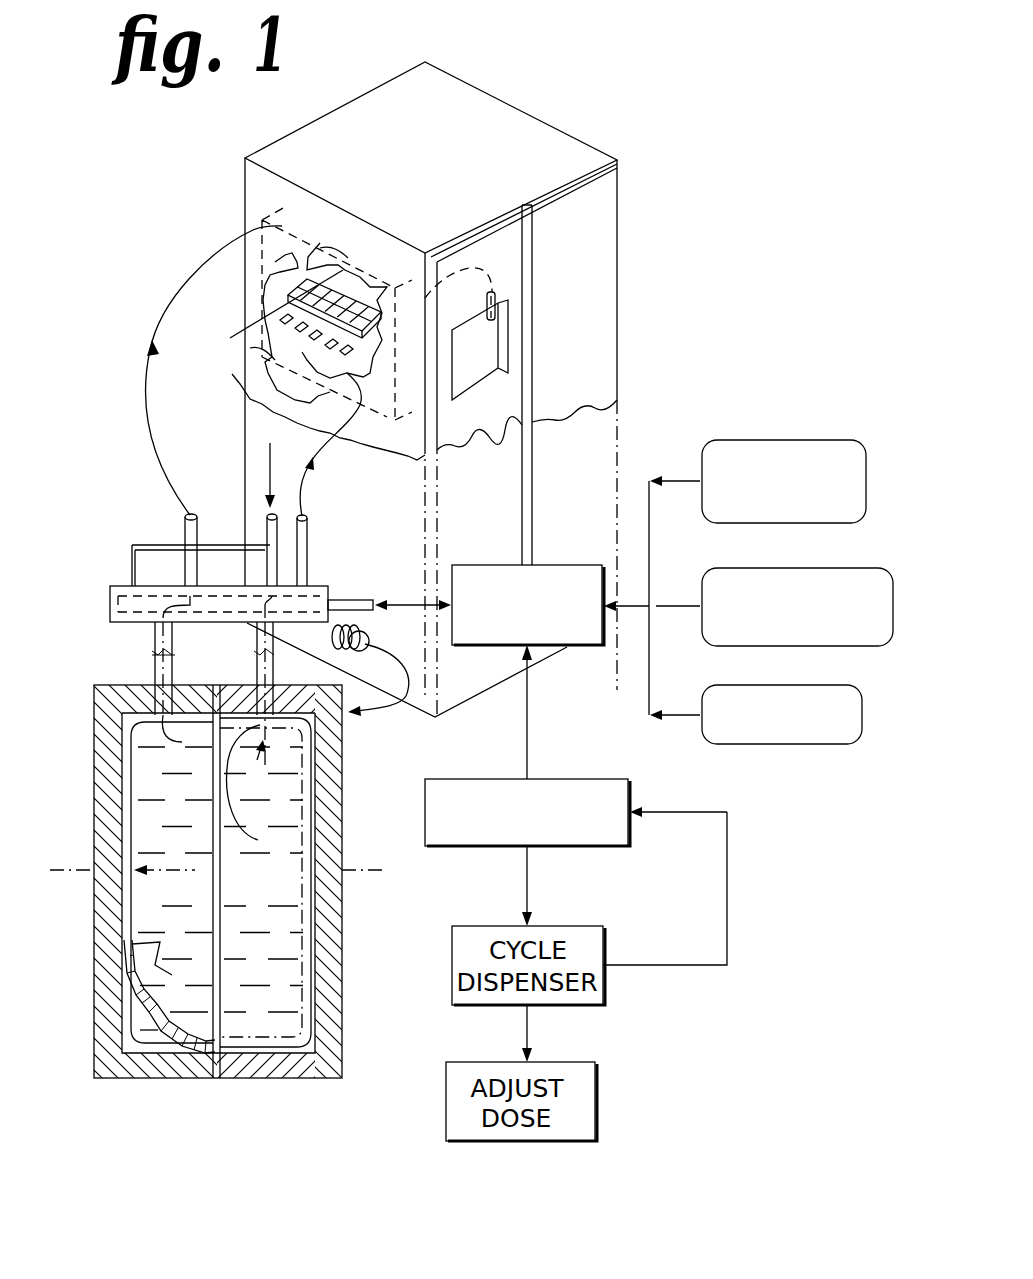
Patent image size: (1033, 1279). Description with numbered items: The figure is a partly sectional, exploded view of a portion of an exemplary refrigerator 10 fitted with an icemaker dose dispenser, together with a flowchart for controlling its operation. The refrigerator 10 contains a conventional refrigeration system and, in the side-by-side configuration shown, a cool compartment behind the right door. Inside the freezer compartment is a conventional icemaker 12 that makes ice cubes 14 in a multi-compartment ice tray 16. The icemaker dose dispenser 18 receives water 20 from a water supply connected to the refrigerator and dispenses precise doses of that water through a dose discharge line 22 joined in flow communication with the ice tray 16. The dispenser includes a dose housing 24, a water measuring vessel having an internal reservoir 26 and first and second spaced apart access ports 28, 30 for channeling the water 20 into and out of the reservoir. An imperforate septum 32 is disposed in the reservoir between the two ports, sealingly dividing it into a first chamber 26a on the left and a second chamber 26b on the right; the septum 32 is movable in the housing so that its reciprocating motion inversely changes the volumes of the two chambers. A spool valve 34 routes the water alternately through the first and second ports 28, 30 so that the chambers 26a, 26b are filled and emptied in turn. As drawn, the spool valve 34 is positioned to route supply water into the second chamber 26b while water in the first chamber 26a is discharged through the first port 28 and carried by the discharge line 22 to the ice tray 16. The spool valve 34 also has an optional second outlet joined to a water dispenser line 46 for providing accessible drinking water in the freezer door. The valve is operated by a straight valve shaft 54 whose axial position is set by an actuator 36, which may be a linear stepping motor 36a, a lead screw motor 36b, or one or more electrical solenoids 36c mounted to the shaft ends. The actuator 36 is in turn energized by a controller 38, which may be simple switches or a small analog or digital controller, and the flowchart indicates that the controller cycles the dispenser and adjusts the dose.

The refrigerator 10 is at (218, 201).
The icemaker 12 is at (256, 306).
The ice cubes 14 is at (267, 360).
The ice tray 16 is at (320, 248).
The icemaker dose dispenser 18 is at (98, 660).
The water 20 is at (266, 446).
The dose discharge line 22 is at (145, 412).
The dose housing 24 is at (362, 626).
The internal reservoir 26 is at (128, 1021).
The first chamber 26a is at (140, 1032).
The second chamber 26b is at (265, 882).
The first access port 28 is at (186, 734).
The second access port 30 is at (262, 789).
The imperforate septum 32 is at (166, 966).
The spool valve 34 is at (108, 588).
The actuator 36 is at (595, 648).
The linear stepping motor 36a is at (740, 440).
The lead screw motor 36b is at (826, 568).
The electrical solenoid 36c is at (772, 744).
The controller 38 is at (556, 779).
The water dispenser line 46 is at (333, 480).
The valve shaft 54 is at (348, 600).